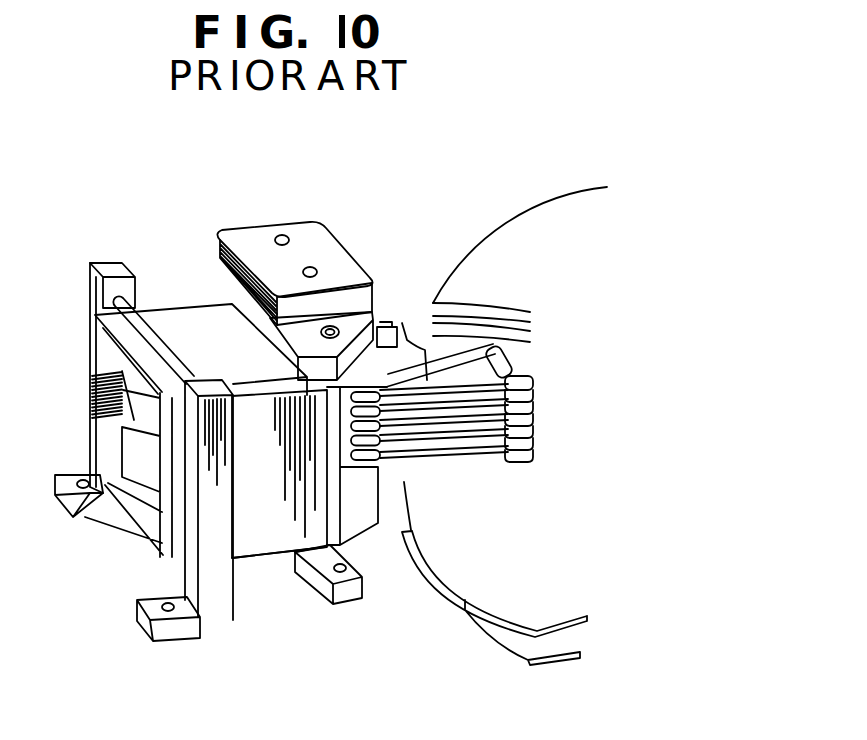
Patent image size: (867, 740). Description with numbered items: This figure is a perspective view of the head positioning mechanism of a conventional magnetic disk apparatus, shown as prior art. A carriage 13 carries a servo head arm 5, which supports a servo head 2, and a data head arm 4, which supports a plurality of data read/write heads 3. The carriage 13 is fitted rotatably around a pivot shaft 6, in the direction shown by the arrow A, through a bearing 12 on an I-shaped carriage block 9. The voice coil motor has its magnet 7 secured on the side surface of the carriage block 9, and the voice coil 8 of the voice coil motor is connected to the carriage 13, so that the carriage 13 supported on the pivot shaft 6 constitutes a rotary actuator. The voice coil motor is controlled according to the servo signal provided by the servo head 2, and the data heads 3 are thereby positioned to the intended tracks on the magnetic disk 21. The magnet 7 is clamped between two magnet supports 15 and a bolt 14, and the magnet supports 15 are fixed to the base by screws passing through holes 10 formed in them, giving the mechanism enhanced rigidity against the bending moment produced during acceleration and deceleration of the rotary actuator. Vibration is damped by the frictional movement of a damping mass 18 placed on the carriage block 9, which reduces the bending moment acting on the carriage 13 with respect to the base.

The servo head 2 is at (512, 357).
The data read/write heads 3 is at (541, 427).
The data head arm 4 is at (433, 433).
The servo head arm 5 is at (402, 323).
The pivot shaft 6 is at (338, 326).
The magnet 7 is at (193, 328).
The voice coil 8 is at (93, 423).
The carriage block 9 is at (325, 578).
The holes 10 is at (348, 577).
The bearing 12 is at (323, 322).
The carriage 13 is at (340, 450).
The bolt 14 is at (140, 308).
The magnet supports 15 is at (220, 620).
The damping mass 18 is at (244, 228).
The magnetic disk 21 is at (463, 603).